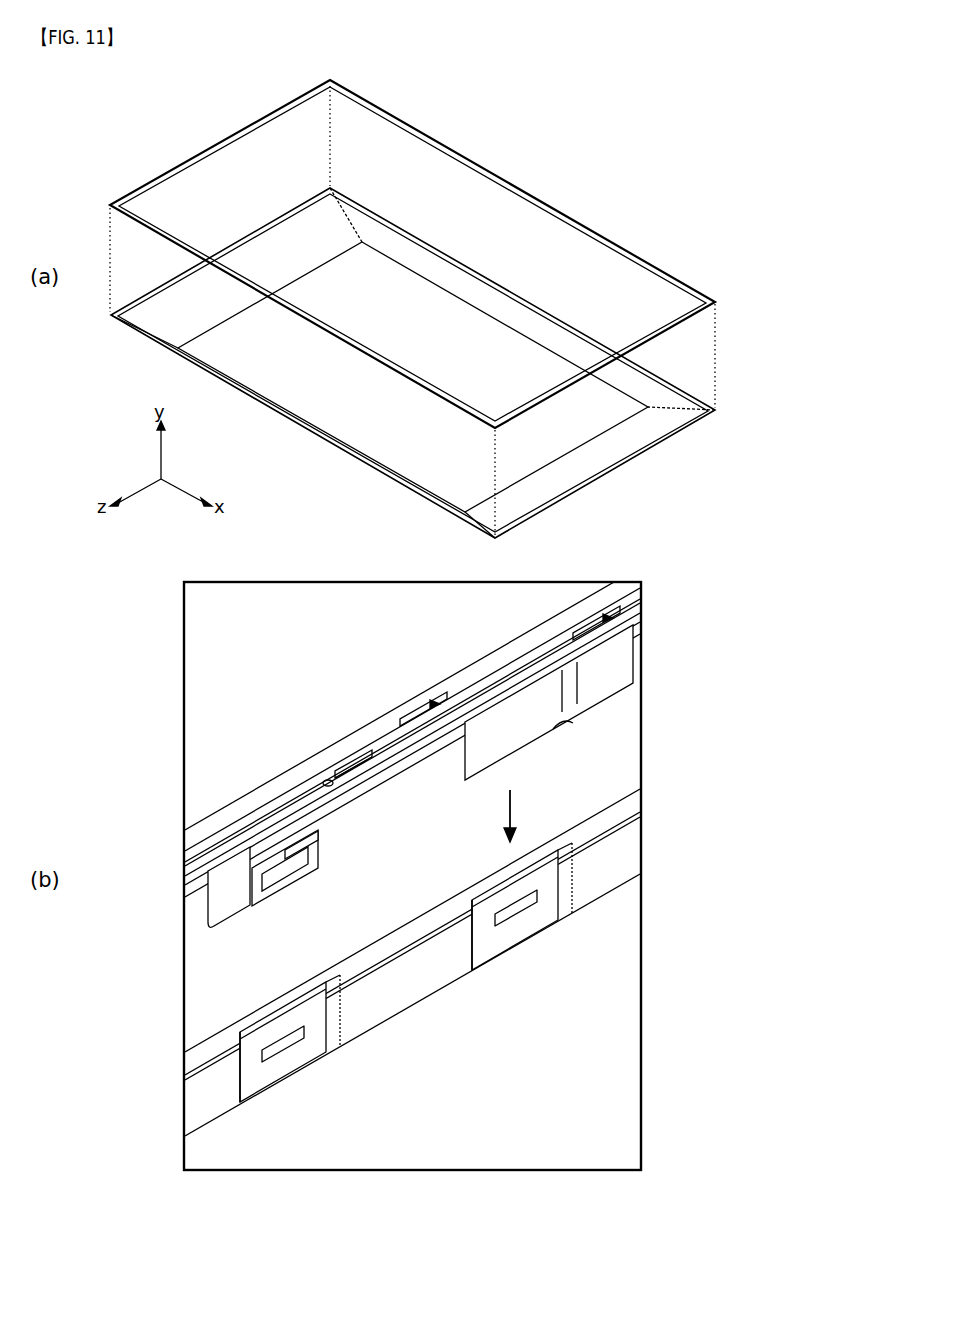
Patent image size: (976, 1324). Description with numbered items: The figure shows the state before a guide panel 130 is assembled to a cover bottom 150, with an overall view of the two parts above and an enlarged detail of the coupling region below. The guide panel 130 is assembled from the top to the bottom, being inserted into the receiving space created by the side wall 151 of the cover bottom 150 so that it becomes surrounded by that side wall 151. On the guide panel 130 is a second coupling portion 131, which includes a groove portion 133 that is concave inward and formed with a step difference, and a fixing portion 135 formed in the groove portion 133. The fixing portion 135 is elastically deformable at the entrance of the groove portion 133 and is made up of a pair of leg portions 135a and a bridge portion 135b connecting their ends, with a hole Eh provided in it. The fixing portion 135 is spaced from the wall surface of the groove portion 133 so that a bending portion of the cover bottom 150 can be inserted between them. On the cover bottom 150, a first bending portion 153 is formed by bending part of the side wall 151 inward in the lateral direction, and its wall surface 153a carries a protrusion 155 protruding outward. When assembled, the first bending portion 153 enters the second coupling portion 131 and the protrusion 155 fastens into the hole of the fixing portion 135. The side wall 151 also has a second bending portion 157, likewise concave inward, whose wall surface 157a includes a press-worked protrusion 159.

The guide panel 130 is at (570, 194).
The cover bottom 150 is at (698, 446).
The second coupling portion 131 is at (280, 914).
The groove portion 133 is at (553, 742).
The fixing portion 135 is at (318, 706).
The leg portions 135a is at (318, 796).
The bridge portion 135b is at (272, 790).
The engagement hole Eh is at (290, 872).
The side wall 151 is at (372, 1018).
The first bending portion 153 is at (324, 1058).
The wall surface 153a is at (250, 1062).
The protrusion 155 is at (292, 1058).
The second bending portion 157 is at (558, 932).
The tab side wall 157a is at (483, 926).
The wall surface 159 is at (525, 920).